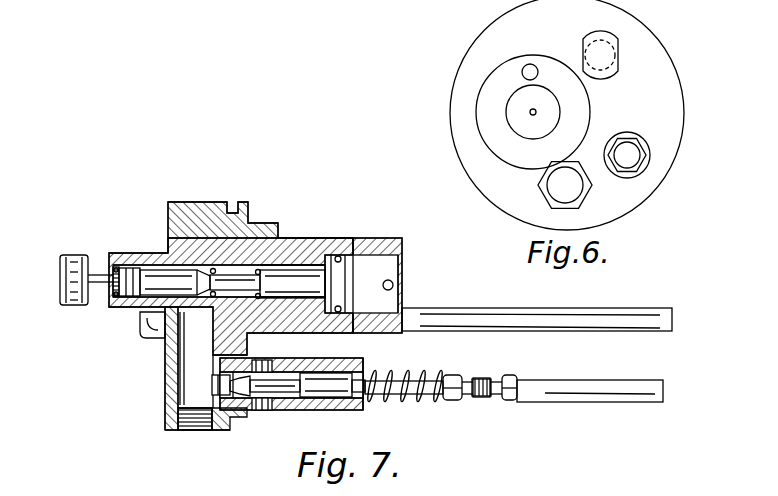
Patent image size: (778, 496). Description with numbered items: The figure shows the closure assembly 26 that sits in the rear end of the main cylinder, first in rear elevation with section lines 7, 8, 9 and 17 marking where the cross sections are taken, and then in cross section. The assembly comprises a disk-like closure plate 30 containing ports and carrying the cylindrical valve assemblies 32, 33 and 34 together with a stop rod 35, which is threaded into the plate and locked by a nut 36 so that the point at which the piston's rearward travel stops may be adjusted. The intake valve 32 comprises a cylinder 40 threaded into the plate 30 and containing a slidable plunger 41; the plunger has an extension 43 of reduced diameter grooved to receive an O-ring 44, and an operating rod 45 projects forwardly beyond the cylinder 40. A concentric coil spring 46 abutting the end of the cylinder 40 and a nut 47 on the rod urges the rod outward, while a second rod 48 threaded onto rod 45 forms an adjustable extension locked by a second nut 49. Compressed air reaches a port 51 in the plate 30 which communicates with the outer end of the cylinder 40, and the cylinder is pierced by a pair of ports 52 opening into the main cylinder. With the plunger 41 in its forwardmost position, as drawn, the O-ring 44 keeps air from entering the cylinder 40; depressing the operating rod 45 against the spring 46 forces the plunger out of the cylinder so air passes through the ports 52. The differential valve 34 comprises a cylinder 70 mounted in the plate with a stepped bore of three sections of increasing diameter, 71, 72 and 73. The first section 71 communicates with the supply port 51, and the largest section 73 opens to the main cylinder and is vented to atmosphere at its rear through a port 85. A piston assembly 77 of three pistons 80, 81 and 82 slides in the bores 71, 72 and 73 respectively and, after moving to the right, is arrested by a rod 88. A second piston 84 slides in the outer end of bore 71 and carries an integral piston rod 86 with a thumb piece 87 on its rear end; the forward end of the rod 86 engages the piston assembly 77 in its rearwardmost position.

In FIG. 6, the section line 7- 7 is at (440, 70).
In FIG. 7, the section line 8- 8 is at (53, 278).
In FIG. 7, the section line 9- 9 is at (199, 150).
In FIG. 6, the section line 17- 17 is at (690, 53).
In FIG. 7, the closure assembly 26 is at (312, 218).
In FIG. 7, the closure plate 30 is at (183, 203).
In FIG. 6, the closure plate 30 is at (673, 98).
In FIG. 7, the intake valve 32 is at (328, 410).
In FIG. 6, the intake valve 32 is at (636, 143).
In FIG. 6, the cylindrical valve assembly 33 is at (620, 60).
In FIG. 7, the differential valve 34 is at (339, 239).
In FIG. 6, the differential valve 34 is at (584, 108).
In FIG. 7, the stop rod 35 is at (616, 313).
In FIG. 6, the stop rod 35 is at (571, 186).
In FIG. 7, the nut 36 is at (157, 336).
In FIG. 6, the nut 36 is at (541, 184).
In FIG. 7, the cylinder 40 is at (368, 367).
In FIG. 7, the plunger 41 is at (322, 380).
In FIG. 7, the extension 43 is at (212, 373).
In FIG. 7, the O-ring 44 is at (242, 403).
In FIG. 7, the operating rod 45 is at (390, 400).
In FIG. 7, the coil spring 46 is at (425, 376).
In FIG. 7, the nut 47 is at (453, 401).
In FIG. 7, the second rod 48 is at (592, 386).
In FIG. 7, the second nut 49 is at (511, 401).
In FIG. 7, the port 51 is at (196, 420).
In FIG. 7, the ports 52 is at (275, 366).
In FIG. 7, the cylinder 70 is at (392, 241).
In FIG. 7, the first bore section 71 is at (203, 265).
In FIG. 7, the second bore section 72 is at (275, 266).
In FIG. 7, the third bore section 73 is at (400, 268).
In FIG. 7, the piston assembly 77 is at (359, 299).
In FIG. 7, the piston 80 is at (237, 292).
In FIG. 7, the piston 81 is at (283, 292).
In FIG. 7, the piston 82 is at (352, 287).
In FIG. 7, the second piston 84 is at (136, 272).
In FIG. 6, the port 85 is at (523, 65).
In FIG. 7, the piston rod 86 is at (103, 284).
In FIG. 7, the thumb piece 87 is at (75, 262).
In FIG. 6, the thumb piece 87 is at (533, 137).
In FIG. 7, the rod 88 is at (394, 284).